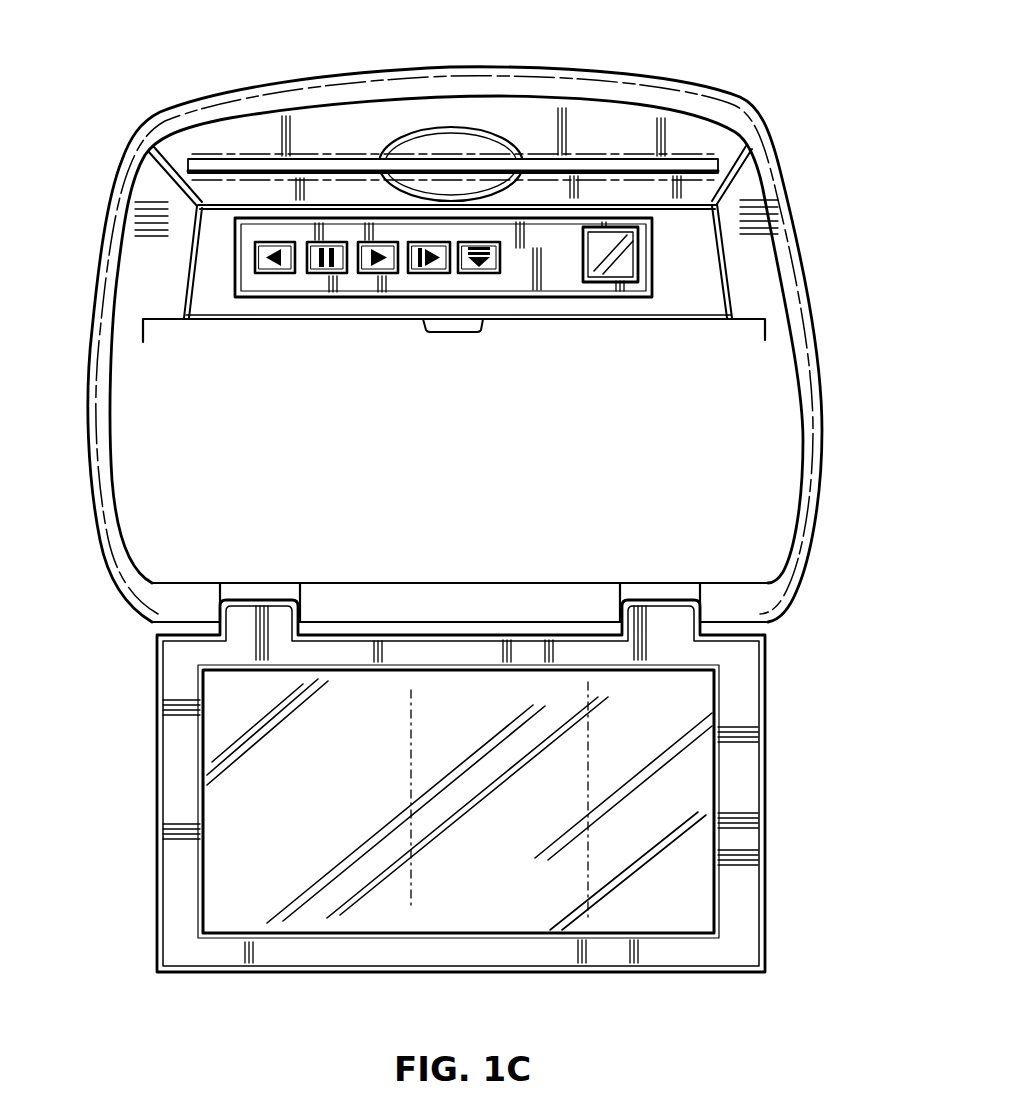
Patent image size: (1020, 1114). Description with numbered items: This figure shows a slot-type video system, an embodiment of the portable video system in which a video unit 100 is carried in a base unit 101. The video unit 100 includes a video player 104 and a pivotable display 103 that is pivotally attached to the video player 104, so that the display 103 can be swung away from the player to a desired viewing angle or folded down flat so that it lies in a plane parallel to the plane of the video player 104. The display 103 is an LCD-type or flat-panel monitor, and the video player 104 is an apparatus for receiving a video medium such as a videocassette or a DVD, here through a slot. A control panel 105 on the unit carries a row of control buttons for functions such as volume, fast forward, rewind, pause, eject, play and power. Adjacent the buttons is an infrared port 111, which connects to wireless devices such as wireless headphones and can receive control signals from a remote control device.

The video unit 100 is at (806, 678).
The base unit 101 is at (735, 114).
The pivotable display 103 is at (157, 795).
The video player 104 is at (167, 177).
The control panel 105 is at (235, 261).
The infrared (IR) port 111 is at (623, 252).